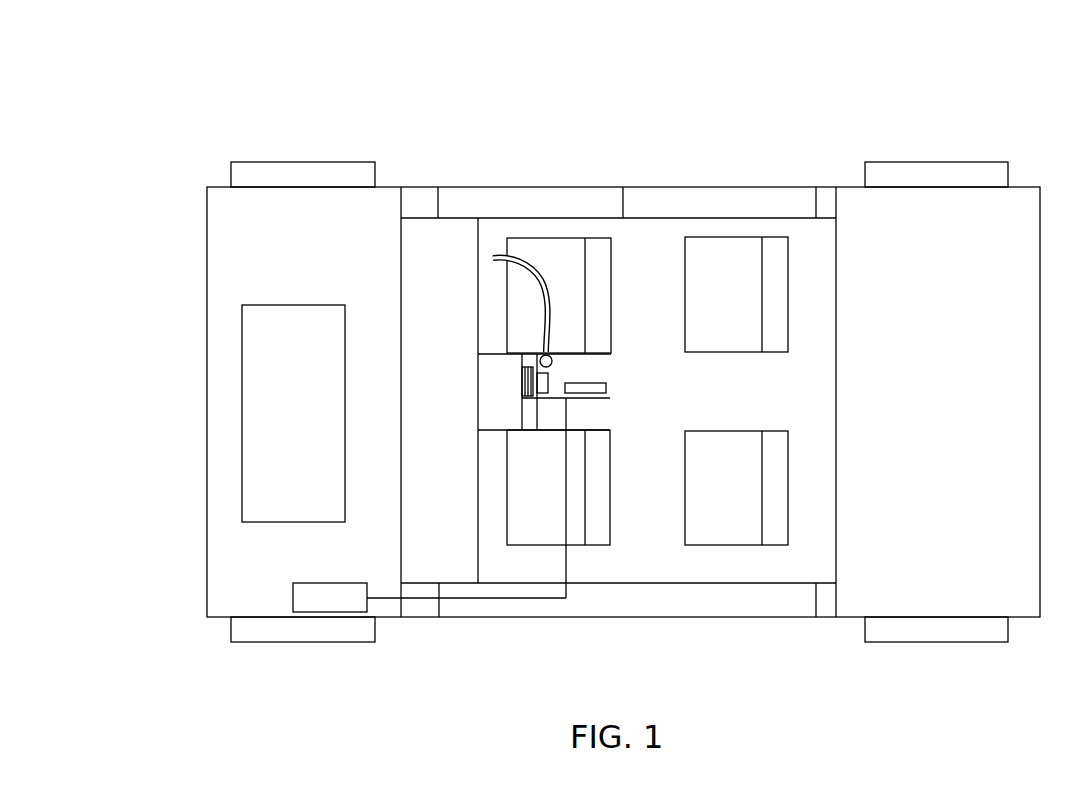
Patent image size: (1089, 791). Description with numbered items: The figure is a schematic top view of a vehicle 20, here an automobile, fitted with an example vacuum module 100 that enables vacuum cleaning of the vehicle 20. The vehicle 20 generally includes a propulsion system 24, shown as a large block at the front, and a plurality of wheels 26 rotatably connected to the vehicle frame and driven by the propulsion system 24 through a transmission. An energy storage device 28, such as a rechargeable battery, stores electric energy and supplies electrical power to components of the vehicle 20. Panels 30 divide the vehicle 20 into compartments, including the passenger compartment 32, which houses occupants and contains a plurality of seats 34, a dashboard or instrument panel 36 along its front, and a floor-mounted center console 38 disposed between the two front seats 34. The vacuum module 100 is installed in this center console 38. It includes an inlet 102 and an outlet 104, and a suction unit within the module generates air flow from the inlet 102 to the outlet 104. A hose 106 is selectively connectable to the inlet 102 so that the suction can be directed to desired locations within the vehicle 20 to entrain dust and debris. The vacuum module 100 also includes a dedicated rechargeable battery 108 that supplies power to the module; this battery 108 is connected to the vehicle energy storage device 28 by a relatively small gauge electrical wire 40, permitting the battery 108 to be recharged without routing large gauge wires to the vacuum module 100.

The vehicle 20 is at (280, 84).
The propulsion system 24 is at (277, 305).
The wheels 26 is at (275, 162).
The energy storage device 28 is at (293, 592).
The panels 30 is at (835, 550).
The passenger compartment 32 is at (762, 396).
The seats 34 is at (572, 238).
The instrument panel 36 is at (433, 250).
The floor-mounted center console 38 is at (488, 432).
The electrical wire 40 is at (518, 599).
The vacuum module 100 is at (598, 340).
The inlet 102 is at (552, 357).
The outlet 104 is at (522, 380).
The hose 106 is at (533, 250).
The dedicated battery 108 is at (608, 388).